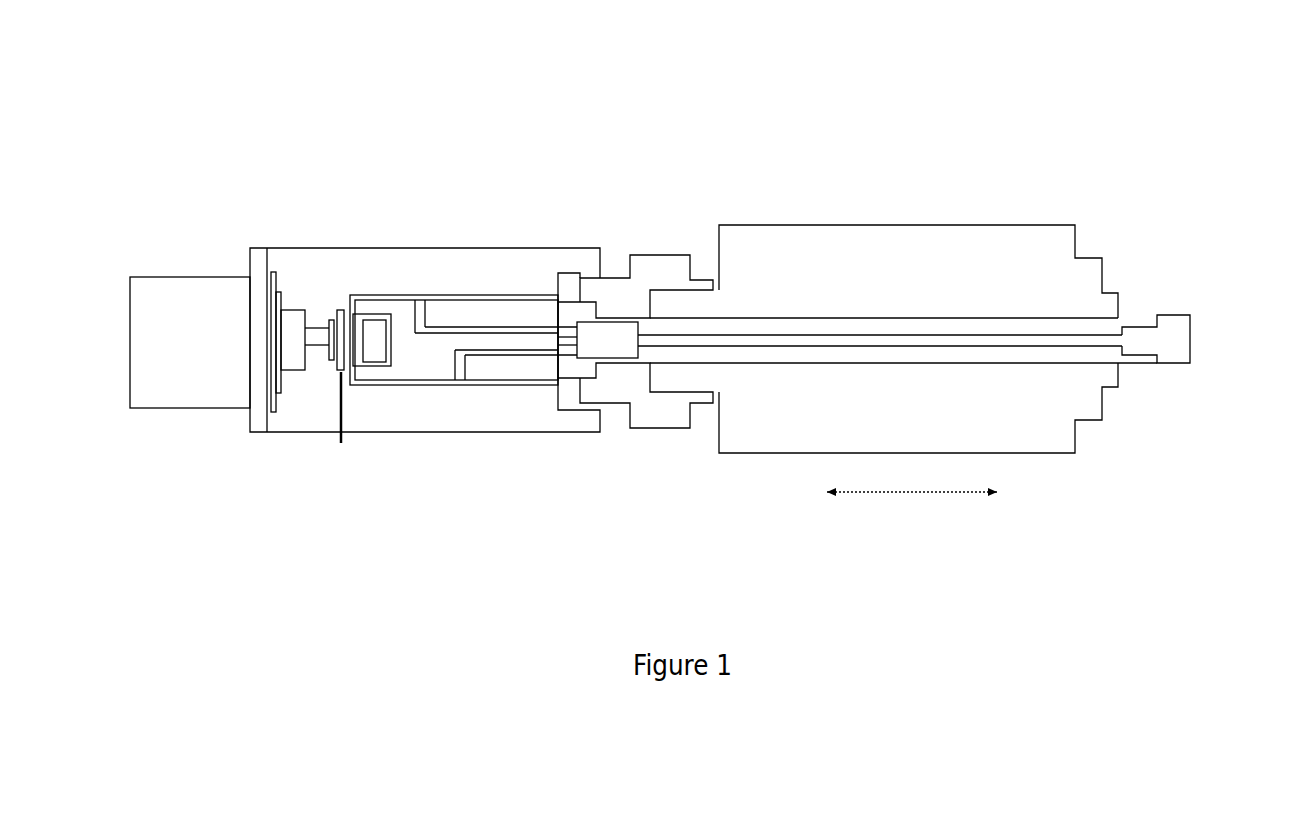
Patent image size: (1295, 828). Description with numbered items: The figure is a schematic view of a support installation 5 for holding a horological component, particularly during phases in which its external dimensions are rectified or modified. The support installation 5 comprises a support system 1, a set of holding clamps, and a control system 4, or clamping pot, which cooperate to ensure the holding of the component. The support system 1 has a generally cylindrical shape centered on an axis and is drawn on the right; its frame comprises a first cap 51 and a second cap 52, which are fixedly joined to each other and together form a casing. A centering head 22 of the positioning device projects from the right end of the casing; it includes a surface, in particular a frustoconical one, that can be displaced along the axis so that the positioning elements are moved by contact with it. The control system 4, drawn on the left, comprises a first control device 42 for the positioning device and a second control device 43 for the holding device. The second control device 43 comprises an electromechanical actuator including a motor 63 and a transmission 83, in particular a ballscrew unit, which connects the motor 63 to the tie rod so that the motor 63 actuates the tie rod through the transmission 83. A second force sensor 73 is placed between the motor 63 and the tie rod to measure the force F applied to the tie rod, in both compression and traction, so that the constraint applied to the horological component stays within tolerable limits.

The support system 1 is at (1112, 265).
The control system 4 is at (508, 242).
The support installation 5 is at (1192, 118).
The centering head 22 is at (1170, 342).
The first control device 42 is at (433, 338).
The second control device 43 is at (402, 328).
The first cap 51 is at (1062, 390).
The second cap 52 is at (763, 400).
The motor 63 is at (202, 328).
The second force sensor 73 is at (337, 362).
The transmission 83 is at (322, 340).